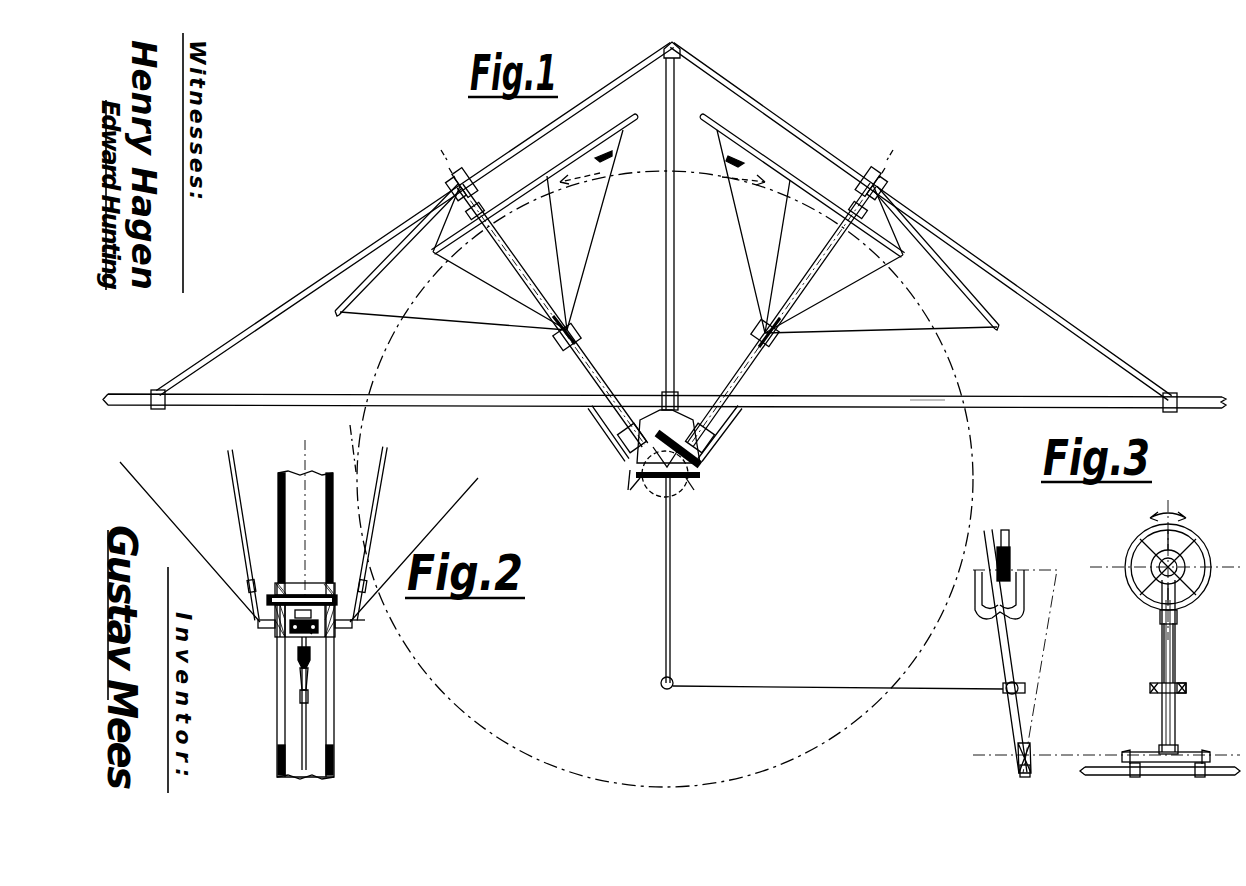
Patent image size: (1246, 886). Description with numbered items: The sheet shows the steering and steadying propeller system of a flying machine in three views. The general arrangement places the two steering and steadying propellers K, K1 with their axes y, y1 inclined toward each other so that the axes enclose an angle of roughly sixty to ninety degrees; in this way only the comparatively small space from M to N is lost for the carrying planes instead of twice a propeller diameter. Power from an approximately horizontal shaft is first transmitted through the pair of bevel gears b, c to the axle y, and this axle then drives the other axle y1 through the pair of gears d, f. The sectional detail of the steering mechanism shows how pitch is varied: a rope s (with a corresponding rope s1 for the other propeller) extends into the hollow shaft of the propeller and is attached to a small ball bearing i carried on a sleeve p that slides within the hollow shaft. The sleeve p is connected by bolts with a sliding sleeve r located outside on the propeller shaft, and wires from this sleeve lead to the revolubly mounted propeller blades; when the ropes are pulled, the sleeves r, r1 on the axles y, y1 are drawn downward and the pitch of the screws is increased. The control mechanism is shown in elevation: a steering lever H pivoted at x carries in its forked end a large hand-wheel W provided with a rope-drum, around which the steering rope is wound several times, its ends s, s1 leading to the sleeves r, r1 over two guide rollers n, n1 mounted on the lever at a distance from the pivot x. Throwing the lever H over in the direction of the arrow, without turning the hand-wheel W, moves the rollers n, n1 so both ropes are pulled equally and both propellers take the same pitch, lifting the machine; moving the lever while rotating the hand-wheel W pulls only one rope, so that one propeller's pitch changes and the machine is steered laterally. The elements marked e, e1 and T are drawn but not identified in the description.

In FIG. 1, the steering and steadying propeller K is at (951, 279).
In FIG. 1, the steering and steadying propeller K1 is at (394, 278).
In FIG. 1, the point M is at (371, 439).
In FIG. 1, the point N is at (927, 426).
In FIG. 1, the sliding sleeve r is at (752, 322).
In FIG. 2, the sliding sleeve r is at (355, 625).
In FIG. 1, the sliding sleeve r1 is at (580, 326).
In FIG. 1, the propeller axle y is at (740, 378).
In FIG. 2, the propeller axle y is at (279, 518).
In FIG. 1, the propeller axle y1 is at (608, 396).
In FIG. 1, the bevel gear c is at (703, 458).
In FIG. 1, the gear d is at (703, 488).
In FIG. 1, the hub member e is at (680, 506).
In FIG. 1, the hub member e1 is at (646, 483).
In FIG. 1, the bevel gear b is at (656, 502).
In FIG. 1, the gear f is at (628, 486).
In FIG. 1, the rope s is at (671, 574).
In FIG. 2, the rope s is at (302, 732).
In FIG. 3, the rope s is at (1178, 648).
In FIG. 1, the rope s1 is at (665, 574).
In FIG. 3, the rope s1 is at (1162, 648).
In FIG. 2, the sleeve p is at (283, 628).
In FIG. 2, the ball bearing i is at (318, 630).
In FIG. 3, the hand-wheel W is at (1003, 530).
In FIG. 3, the bracket T is at (1013, 558).
In FIG. 3, the steering lever H is at (1006, 652).
In FIG. 3, the guide roller n is at (1006, 693).
In FIG. 3, the guide roller n1 is at (1160, 695).
In FIG. 3, the pivot x is at (1028, 755).